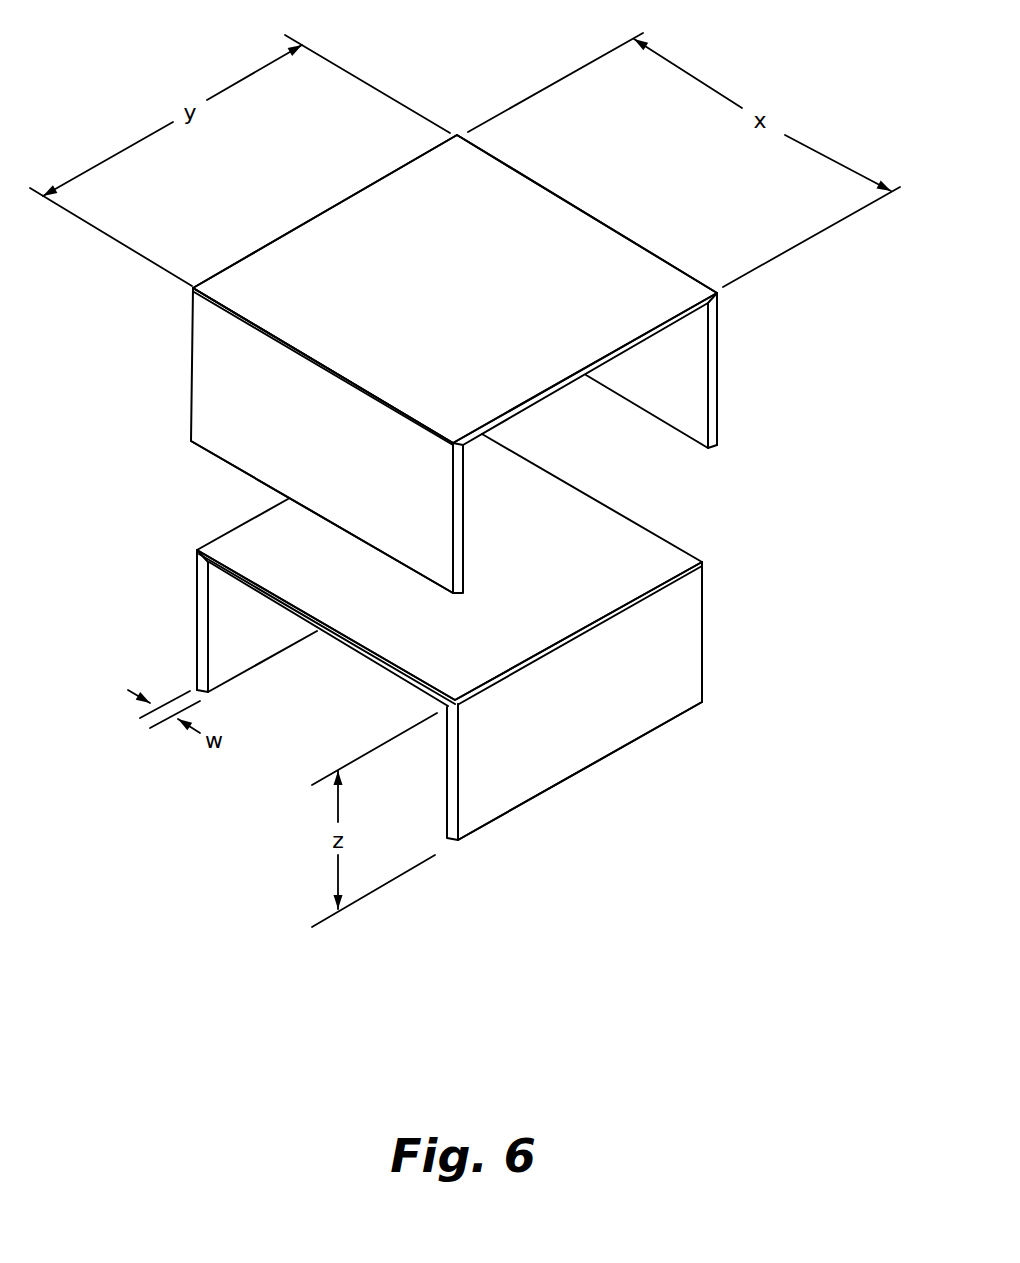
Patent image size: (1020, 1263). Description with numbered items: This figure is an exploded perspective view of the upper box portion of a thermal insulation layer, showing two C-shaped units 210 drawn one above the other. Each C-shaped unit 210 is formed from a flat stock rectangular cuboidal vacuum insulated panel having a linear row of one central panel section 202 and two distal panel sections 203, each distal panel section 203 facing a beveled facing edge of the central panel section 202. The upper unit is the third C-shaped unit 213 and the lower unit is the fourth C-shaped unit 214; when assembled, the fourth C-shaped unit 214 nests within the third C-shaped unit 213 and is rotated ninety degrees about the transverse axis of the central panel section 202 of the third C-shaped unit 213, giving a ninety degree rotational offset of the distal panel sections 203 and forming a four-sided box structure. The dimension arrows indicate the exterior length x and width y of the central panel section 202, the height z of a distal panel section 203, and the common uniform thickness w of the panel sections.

The central panel section 202 is at (337, 218).
The distal panel section 203 is at (212, 375).
The C-shaped unit 210 is at (445, 487).
The third C-shaped unit 213 is at (750, 430).
The fourth C-shaped unit 214 is at (661, 750).